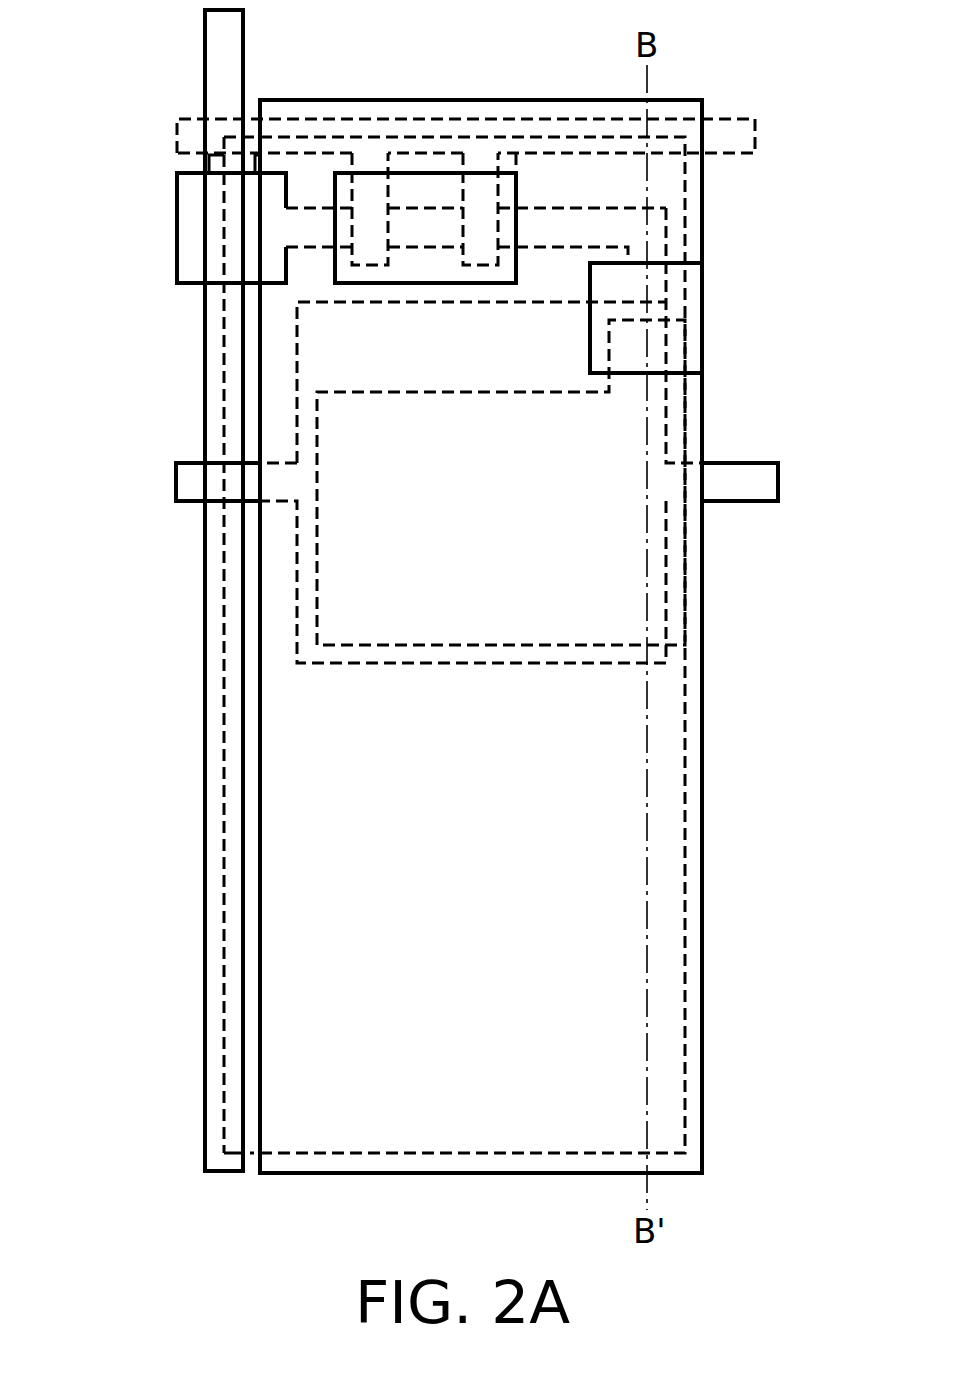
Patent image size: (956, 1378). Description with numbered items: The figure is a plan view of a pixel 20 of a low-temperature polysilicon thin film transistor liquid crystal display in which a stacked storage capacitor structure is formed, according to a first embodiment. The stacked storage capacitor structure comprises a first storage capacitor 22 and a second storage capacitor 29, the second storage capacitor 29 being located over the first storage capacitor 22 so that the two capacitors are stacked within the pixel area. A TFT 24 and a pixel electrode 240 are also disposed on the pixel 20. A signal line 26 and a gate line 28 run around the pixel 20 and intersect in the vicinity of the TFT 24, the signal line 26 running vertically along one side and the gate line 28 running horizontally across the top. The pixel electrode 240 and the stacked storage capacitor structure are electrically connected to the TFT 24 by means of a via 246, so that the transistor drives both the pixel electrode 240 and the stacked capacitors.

The pixel 20 is at (703, 917).
The first storage capacitor (Cst) 22 is at (320, 337).
The TFT 24 is at (333, 230).
The signal line 26 is at (220, 47).
The gate line 28 is at (426, 128).
The second storage capacitor (Cst') 29 is at (617, 573).
The pixel electrode 240 is at (224, 950).
The via 246 is at (693, 298).